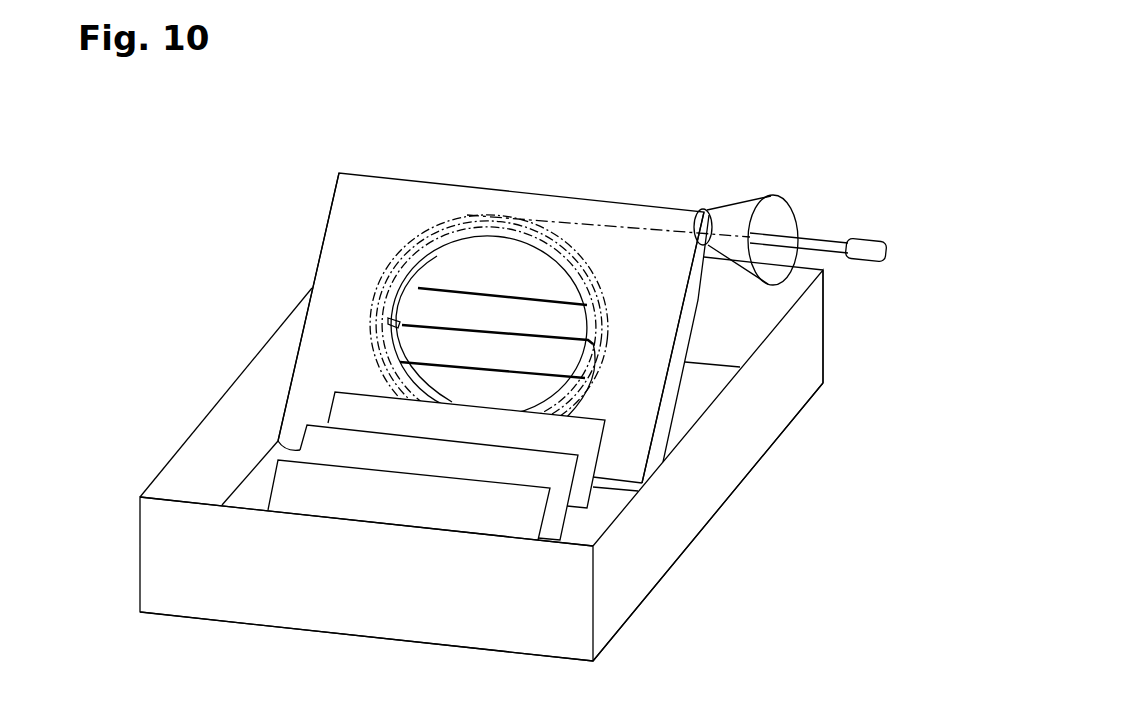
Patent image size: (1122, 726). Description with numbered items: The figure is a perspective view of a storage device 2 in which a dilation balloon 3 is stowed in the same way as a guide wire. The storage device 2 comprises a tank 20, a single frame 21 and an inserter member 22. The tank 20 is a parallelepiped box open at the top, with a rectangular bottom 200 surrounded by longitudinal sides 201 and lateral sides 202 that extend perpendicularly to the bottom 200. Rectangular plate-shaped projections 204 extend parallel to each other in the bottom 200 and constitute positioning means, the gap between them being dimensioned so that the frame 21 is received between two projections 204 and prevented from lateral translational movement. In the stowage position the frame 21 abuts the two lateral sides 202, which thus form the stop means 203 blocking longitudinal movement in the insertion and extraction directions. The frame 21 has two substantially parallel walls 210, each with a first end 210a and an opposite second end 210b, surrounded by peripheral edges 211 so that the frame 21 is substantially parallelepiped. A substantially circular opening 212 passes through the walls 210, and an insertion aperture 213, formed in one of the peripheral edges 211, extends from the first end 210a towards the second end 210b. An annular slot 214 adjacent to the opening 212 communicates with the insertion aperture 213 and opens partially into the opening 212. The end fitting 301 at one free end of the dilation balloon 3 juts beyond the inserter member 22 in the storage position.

The storage device 2 is at (808, 192).
The dilation balloon 3 is at (818, 215).
The end fitting 301 is at (863, 247).
The tank 20 is at (492, 479).
The frame 21 is at (560, 363).
The inserter member 22 is at (752, 187).
The bottom 200 is at (700, 397).
The longitudinal sides 201 is at (780, 300).
The lateral sides 202 is at (235, 438).
The stop means 203 is at (207, 465).
The projections 204 is at (373, 452).
The walls 210 is at (355, 235).
The first end 210a is at (710, 288).
The second end 210b is at (328, 212).
The peripheral edges 211 is at (662, 433).
The opening 212 is at (514, 274).
The insertion aperture 213 is at (700, 217).
The slot 214 is at (441, 244).